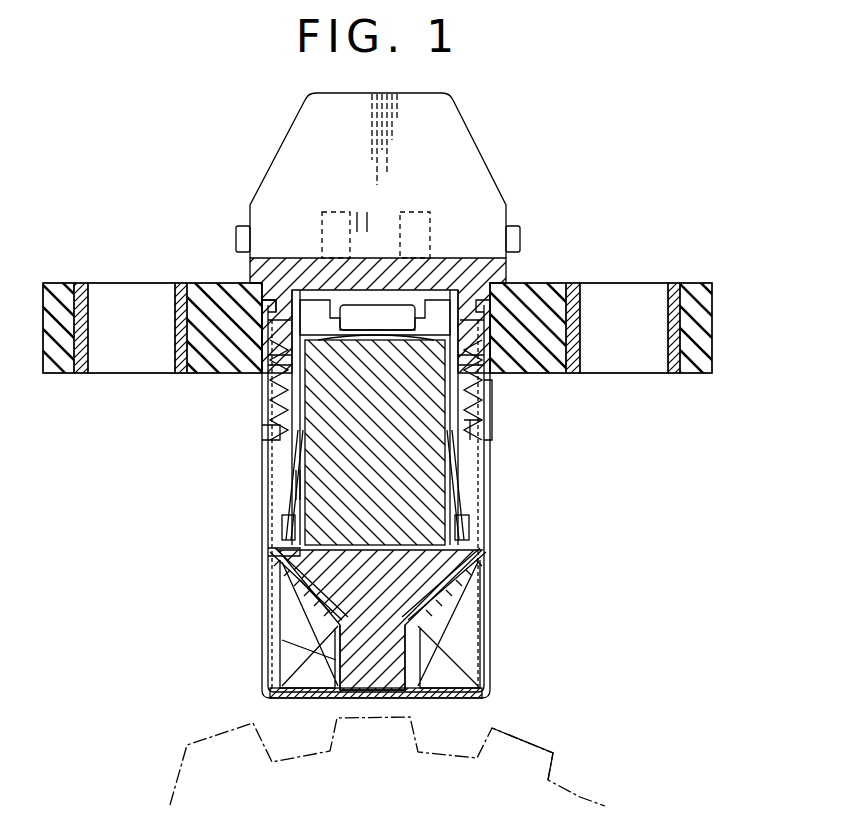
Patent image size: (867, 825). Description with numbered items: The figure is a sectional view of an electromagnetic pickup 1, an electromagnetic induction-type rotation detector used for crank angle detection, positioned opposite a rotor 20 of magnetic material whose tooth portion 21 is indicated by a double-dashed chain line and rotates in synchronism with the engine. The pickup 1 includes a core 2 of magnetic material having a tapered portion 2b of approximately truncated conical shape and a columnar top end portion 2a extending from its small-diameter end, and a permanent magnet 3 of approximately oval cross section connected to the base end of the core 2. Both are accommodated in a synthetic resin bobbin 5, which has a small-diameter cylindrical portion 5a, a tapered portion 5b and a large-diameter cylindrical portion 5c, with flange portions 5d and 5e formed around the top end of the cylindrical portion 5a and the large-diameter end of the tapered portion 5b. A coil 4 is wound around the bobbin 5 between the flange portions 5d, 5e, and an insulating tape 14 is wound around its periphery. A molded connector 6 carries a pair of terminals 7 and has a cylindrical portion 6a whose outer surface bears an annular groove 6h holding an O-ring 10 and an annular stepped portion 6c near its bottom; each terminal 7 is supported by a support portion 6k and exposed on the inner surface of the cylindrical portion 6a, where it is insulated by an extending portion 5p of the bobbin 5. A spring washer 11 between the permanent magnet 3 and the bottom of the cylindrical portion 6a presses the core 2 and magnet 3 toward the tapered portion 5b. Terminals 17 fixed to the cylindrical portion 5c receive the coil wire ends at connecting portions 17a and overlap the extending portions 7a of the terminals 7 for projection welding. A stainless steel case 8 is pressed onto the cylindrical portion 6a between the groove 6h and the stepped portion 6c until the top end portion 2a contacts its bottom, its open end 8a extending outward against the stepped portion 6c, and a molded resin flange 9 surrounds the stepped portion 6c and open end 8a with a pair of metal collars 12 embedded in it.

The electromagnetic pickup 1 is at (494, 152).
The core 2 is at (400, 702).
The top end portion 2a is at (392, 664).
The tapered portion 2b is at (402, 594).
The permanent magnet 3 is at (305, 437).
The coil 4 is at (440, 645).
The bobbin 5 is at (490, 556).
The small-diameter cylindrical portion 5a is at (320, 652).
The tapered portion 5b is at (312, 610).
The large-diameter cylindrical portion 5c is at (298, 490).
The flange portion 5d is at (268, 691).
The flange portion 5e is at (266, 554).
The extending portion 5p is at (262, 305).
The connector 6 is at (492, 270).
The cylindrical portion 6a is at (278, 362).
The annular stepped portion 6c is at (500, 312).
The annular groove 6h is at (500, 372).
The support portion 6k is at (272, 426).
The terminal 7 is at (296, 335).
The extending portion 7a is at (470, 441).
The case 8 is at (262, 578).
The open end 8a is at (260, 336).
The flange 9 is at (202, 300).
The O-ring 10 is at (490, 405).
The spring washer 11 is at (376, 326).
The metal collar 12 is at (86, 283).
The insulating tape 14 is at (490, 578).
The terminal 17 is at (292, 471).
The connecting portion 17a is at (283, 517).
The rotor 20 is at (570, 790).
The tooth portion 21 is at (540, 756).